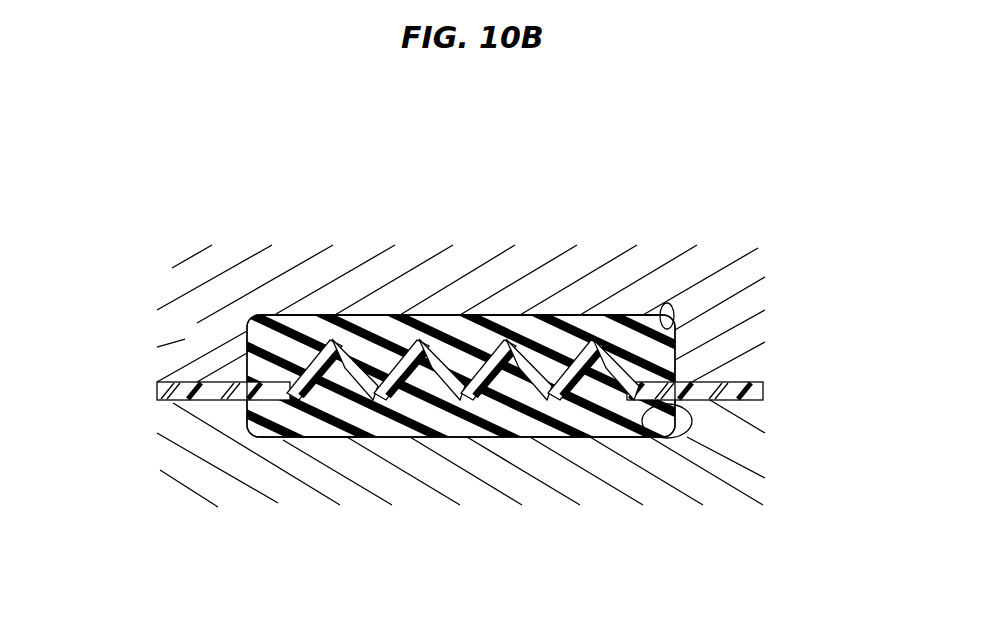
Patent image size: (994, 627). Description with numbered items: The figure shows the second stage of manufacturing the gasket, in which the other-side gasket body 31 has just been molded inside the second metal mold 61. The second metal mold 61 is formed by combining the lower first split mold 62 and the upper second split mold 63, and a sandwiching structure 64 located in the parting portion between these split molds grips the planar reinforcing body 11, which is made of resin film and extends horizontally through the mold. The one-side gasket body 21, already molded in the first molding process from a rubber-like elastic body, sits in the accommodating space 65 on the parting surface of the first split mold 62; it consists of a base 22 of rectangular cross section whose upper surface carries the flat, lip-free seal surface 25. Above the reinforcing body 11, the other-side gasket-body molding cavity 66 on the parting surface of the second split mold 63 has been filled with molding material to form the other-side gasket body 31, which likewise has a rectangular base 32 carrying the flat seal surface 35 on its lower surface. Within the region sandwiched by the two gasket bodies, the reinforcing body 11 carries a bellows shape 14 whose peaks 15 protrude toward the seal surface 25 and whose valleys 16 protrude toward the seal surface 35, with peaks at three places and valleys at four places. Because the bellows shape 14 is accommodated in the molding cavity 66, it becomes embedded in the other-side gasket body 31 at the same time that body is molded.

The reinforcing body 11 is at (768, 389).
The bellows shape 14 is at (572, 318).
The peaks 15 is at (553, 413).
The valleys 16 is at (505, 352).
The one-side gasket body 21 is at (627, 423).
The base 22 is at (340, 430).
The seal surface 25 is at (417, 430).
The other-side gasket body 31 is at (620, 330).
The base 32 is at (355, 347).
The seal surface 35 is at (432, 318).
The second metal mold 61 is at (170, 276).
The first split mold 62 is at (190, 461).
The second split mold 63 is at (157, 346).
The sandwiching structure 64 is at (173, 400).
The accommodating space 65 is at (690, 425).
The other-side gasket-body molding cavity 66 is at (668, 305).